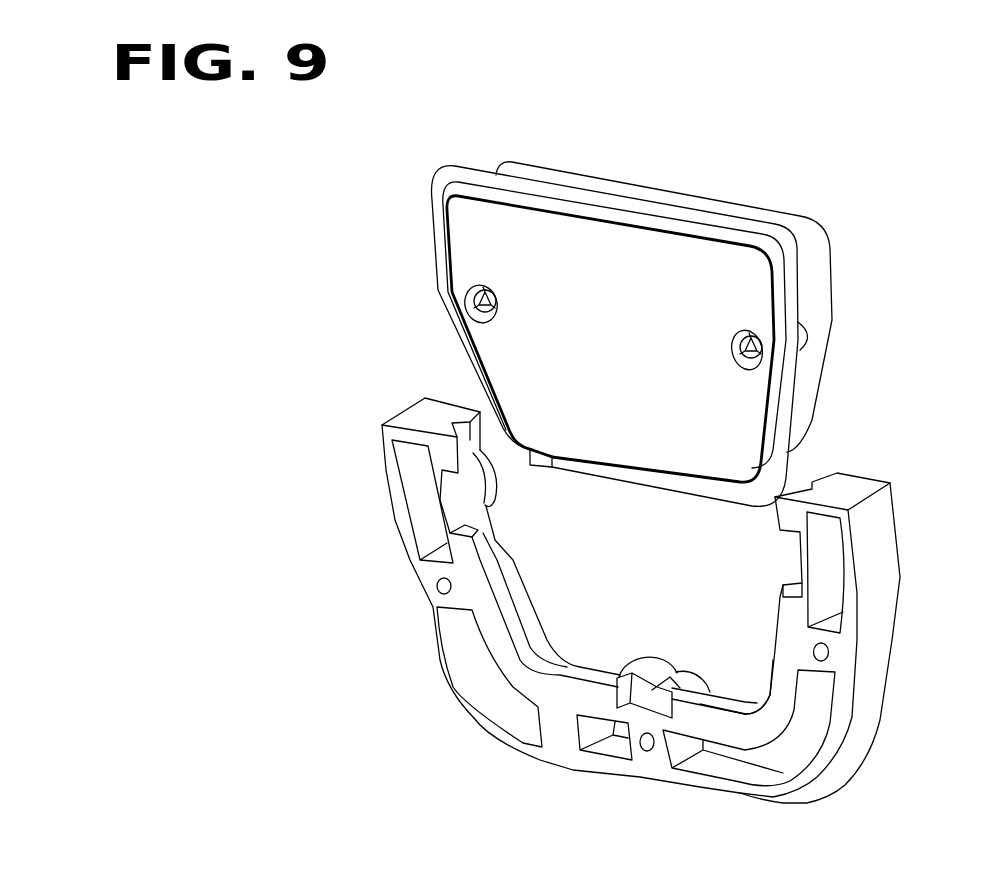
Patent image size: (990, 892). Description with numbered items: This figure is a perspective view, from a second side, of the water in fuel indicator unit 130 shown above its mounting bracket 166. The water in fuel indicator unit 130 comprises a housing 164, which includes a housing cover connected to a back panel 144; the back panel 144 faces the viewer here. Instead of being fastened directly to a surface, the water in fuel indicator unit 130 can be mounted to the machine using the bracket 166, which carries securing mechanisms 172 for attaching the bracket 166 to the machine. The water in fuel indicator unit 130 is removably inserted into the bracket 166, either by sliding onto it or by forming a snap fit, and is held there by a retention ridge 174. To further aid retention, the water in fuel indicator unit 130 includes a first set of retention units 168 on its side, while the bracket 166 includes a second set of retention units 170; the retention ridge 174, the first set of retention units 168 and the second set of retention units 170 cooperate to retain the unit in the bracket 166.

The water in fuel indicator unit 130 is at (772, 184).
The back panel 144 is at (625, 240).
The housing 164 is at (553, 152).
The bracket 166 is at (380, 442).
The first set of retention units 168 is at (810, 337).
The second set of retention units 170 is at (492, 503).
The securing mechanisms 172 is at (438, 584).
The retention ridge 174 is at (753, 706).